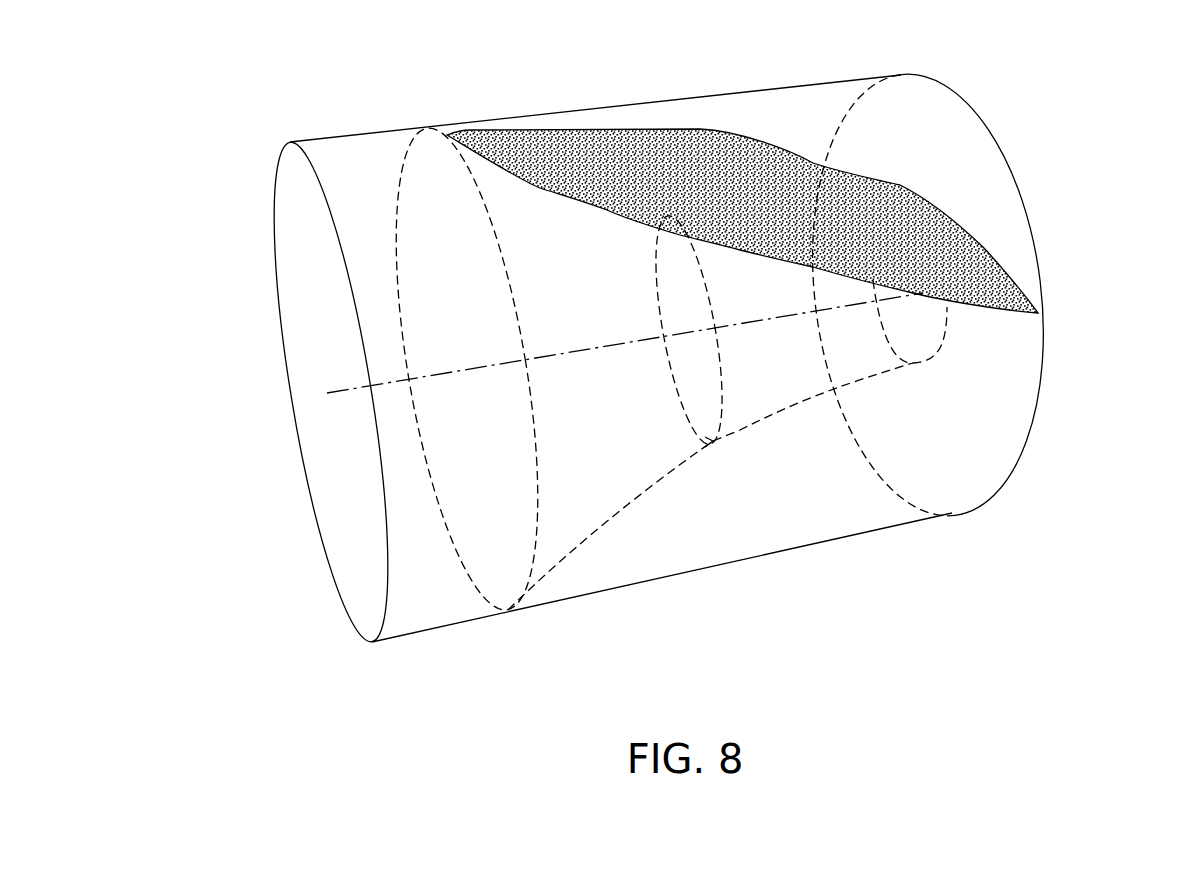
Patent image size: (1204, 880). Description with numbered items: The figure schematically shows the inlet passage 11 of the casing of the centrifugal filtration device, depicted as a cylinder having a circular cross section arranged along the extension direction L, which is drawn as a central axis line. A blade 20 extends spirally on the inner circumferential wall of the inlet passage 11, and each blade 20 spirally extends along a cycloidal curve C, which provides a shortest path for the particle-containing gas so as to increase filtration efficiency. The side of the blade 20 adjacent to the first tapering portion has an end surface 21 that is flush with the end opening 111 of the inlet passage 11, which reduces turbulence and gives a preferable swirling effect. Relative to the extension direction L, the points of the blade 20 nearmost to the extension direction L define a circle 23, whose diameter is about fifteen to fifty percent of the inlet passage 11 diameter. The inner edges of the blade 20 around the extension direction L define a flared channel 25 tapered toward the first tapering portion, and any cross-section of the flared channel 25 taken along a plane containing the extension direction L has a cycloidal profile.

The inlet passage 11 is at (295, 178).
The end opening 111 is at (1023, 447).
The blade 20 is at (707, 170).
The end surface 21 is at (1030, 314).
The circle 23 is at (930, 335).
The flared channel 25 is at (503, 567).
The extension direction L is at (353, 390).
The cycloidal curve C is at (953, 215).